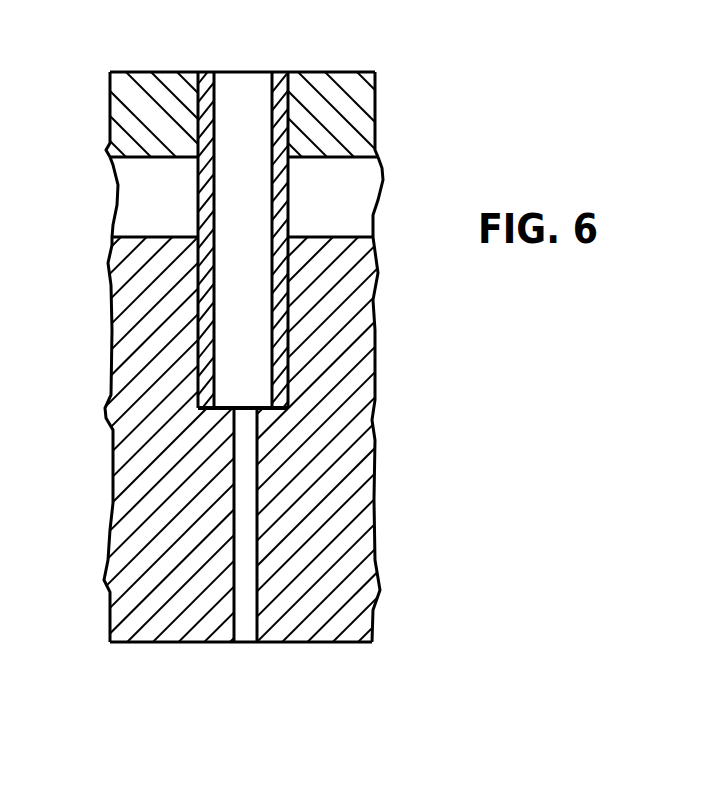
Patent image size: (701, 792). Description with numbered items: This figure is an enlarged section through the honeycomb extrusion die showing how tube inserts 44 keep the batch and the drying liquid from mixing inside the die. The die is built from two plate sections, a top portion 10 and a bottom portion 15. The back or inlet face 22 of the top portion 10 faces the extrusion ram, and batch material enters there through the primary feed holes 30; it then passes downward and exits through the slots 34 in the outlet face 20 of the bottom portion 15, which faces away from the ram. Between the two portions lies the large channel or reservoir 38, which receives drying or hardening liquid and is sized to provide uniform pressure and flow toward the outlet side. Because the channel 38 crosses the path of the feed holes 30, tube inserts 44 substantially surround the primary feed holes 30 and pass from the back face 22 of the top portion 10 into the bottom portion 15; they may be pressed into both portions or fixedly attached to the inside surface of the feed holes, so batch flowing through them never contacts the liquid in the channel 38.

The top portion 10 is at (372, 107).
The bottom portion 15 is at (360, 442).
The outlet face 20 is at (136, 655).
The inlet face 22 is at (140, 50).
The feed holes 30 is at (232, 85).
The slots 34 is at (245, 633).
The channel 38 is at (132, 193).
The tube inserts 44 is at (281, 80).